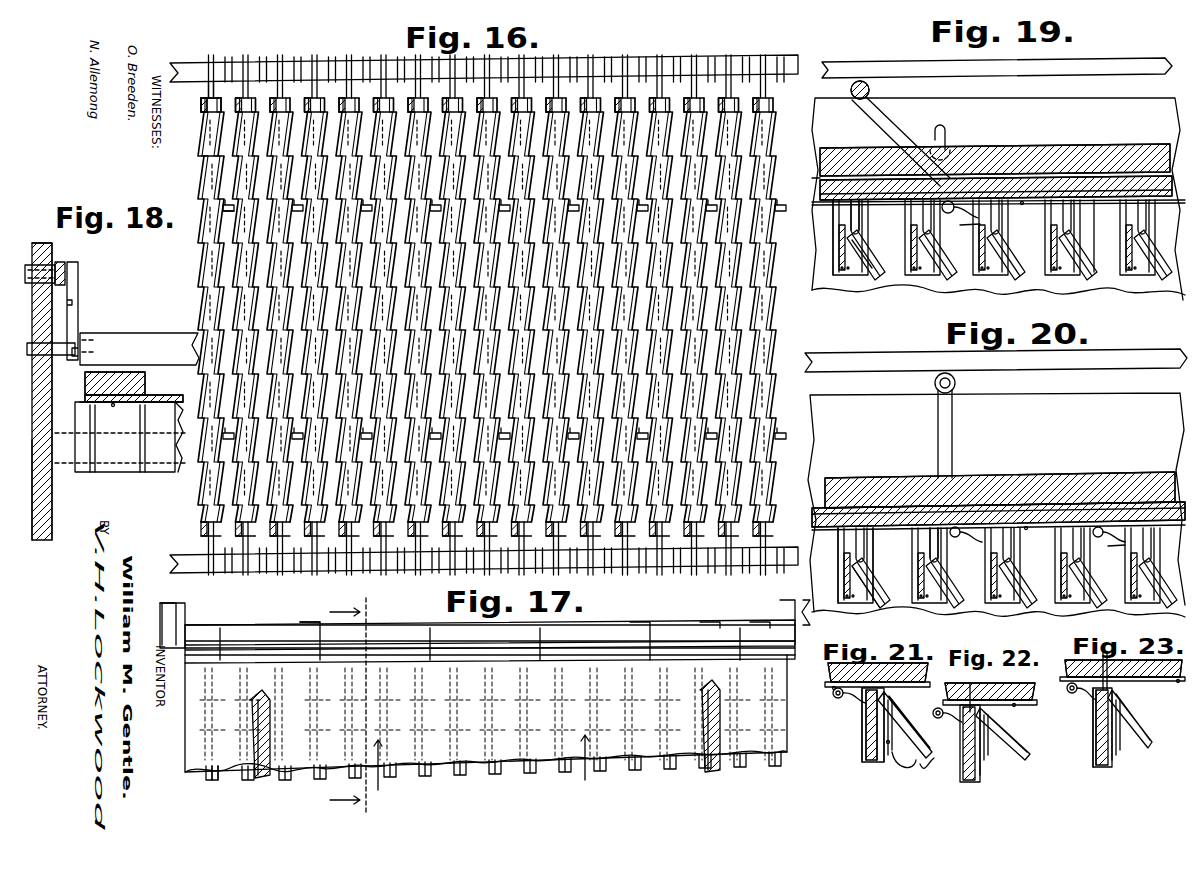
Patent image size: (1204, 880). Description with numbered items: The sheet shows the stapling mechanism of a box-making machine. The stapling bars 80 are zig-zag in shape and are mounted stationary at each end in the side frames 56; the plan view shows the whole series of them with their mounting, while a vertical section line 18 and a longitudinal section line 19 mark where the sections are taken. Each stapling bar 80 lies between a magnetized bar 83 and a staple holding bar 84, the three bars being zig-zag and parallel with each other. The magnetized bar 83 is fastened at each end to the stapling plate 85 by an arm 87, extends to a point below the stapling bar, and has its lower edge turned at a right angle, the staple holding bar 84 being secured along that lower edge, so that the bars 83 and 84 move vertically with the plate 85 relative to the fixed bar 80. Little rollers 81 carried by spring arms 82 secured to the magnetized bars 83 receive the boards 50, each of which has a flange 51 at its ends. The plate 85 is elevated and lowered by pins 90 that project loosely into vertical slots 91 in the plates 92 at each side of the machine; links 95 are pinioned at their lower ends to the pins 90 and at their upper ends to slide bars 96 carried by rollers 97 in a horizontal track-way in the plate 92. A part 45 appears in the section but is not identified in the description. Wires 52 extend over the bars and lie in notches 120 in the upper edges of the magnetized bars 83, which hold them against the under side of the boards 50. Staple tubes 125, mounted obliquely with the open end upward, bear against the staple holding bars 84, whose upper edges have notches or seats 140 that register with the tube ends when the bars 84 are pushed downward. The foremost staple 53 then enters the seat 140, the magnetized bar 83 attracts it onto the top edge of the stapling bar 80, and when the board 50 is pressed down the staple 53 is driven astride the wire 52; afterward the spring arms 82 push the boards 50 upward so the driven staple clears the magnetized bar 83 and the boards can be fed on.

In FIG. 17, the section line 18— 18 is at (352, 703).
In FIG. 17, the section line 19— 19 is at (484, 754).
In FIG. 19, the operating link 45 is at (885, 118).
In FIG. 18, the board 50 is at (162, 395).
In FIG. 19, the board 50 is at (1022, 190).
In FIG. 20, the board 50 is at (1022, 518).
In FIG. 21, the board 50 is at (908, 687).
In FIG. 22, the board 50 is at (1036, 702).
In FIG. 23, the board 50 is at (1156, 682).
In FIG. 18, the flange 51 is at (112, 380).
In FIG. 19, the flange 51 is at (1000, 178).
In FIG. 20, the flange 51 is at (1085, 508).
In FIG. 21, the flange 51 is at (830, 672).
In FIG. 22, the flange 51 is at (970, 683).
In FIG. 23, the flange 51 is at (1064, 668).
In FIG. 18, the wire 52 is at (112, 412).
In FIG. 19, the wire 52 is at (1022, 204).
In FIG. 20, the wire 52 is at (1026, 530).
In FIG. 21, the wire 52 is at (828, 690).
In FIG. 22, the wire 52 is at (1014, 706).
In FIG. 23, the wire 52 is at (1178, 684).
In FIG. 21, the staple 53 is at (910, 784).
In FIG. 22, the staple 53 is at (1016, 740).
In FIG. 23, the staple 53 is at (1140, 752).
In FIG. 16, the side frame 56 is at (302, 582).
In FIG. 17, the side frame 56 is at (485, 618).
In FIG. 18, the side frame 56 is at (34, 480).
In FIG. 19, the side frame 56 is at (998, 285).
In FIG. 20, the side frame 56 is at (998, 612).
In FIG. 16, the stapling bar 80 is at (208, 540).
In FIG. 17, the stapling bar 80 is at (212, 782).
In FIG. 18, the stapling bar 80 is at (68, 460).
In FIG. 19, the stapling bar 80 is at (838, 270).
In FIG. 20, the stapling bar 80 is at (976, 572).
In FIG. 21, the stapling bar 80 is at (866, 740).
In FIG. 22, the stapling bar 80 is at (970, 749).
In FIG. 23, the stapling bar 80 is at (1096, 752).
In FIG. 16, the roller 81 is at (504, 307).
In FIG. 19, the roller 81 is at (948, 212).
In FIG. 20, the roller 81 is at (1098, 538).
In FIG. 21, the roller 81 is at (840, 698).
In FIG. 22, the roller 81 is at (934, 713).
In FIG. 23, the roller 81 is at (1072, 694).
In FIG. 16, the spring arm 82 is at (492, 225).
In FIG. 19, the spring arm 82 is at (966, 230).
In FIG. 20, the spring arm 82 is at (1110, 548).
In FIG. 21, the spring arm 82 is at (850, 706).
In FIG. 22, the spring arm 82 is at (950, 718).
In FIG. 23, the spring arm 82 is at (1086, 702).
In FIG. 16, the magnetized bar 83 is at (770, 140).
In FIG. 17, the magnetized bar 83 is at (210, 776).
In FIG. 18, the magnetized bar 83 is at (158, 472).
In FIG. 19, the magnetized bar 83 is at (840, 252).
In FIG. 20, the magnetized bar 83 is at (972, 590).
In FIG. 21, the magnetized bar 83 is at (863, 750).
In FIG. 23, the magnetized bar 83 is at (1094, 748).
In FIG. 16, the staple holding bar 84 is at (262, 150).
In FIG. 17, the staple holding bar 84 is at (230, 778).
In FIG. 19, the staple holding bar 84 is at (852, 274).
In FIG. 20, the staple holding bar 84 is at (1080, 592).
In FIG. 21, the staple holding bar 84 is at (888, 764).
In FIG. 22, the staple holding bar 84 is at (992, 762).
In FIG. 23, the staple holding bar 84 is at (1124, 765).
In FIG. 17, the stapling plate 85 is at (458, 792).
In FIG. 18, the stapling plate 85 is at (148, 332).
In FIG. 19, the stapling plate 85 is at (1090, 146).
In FIG. 20, the stapling plate 85 is at (880, 478).
In FIG. 16, the arm 87 is at (786, 110).
In FIG. 18, the arm 87 is at (80, 392).
In FIG. 19, the arm 87 is at (820, 200).
In FIG. 17, the pin 90 is at (752, 622).
In FIG. 18, the pin 90 is at (58, 355).
In FIG. 19, the vertical slot 91 is at (942, 140).
In FIG. 17, the plate 92 is at (618, 622).
In FIG. 18, the plate 92 is at (32, 312).
In FIG. 19, the plate 92 is at (1095, 64).
In FIG. 20, the plate 92 is at (1128, 364).
In FIG. 17, the link 95 is at (705, 648).
In FIG. 18, the link 95 is at (78, 318).
In FIG. 20, the link 95 is at (948, 446).
In FIG. 17, the slide bar 96 is at (655, 645).
In FIG. 18, the slide bar 96 is at (62, 262).
In FIG. 19, the slide bar 96 is at (902, 72).
In FIG. 20, the slide bar 96 is at (890, 372).
In FIG. 17, the roller 97 is at (728, 622).
In FIG. 18, the roller 97 is at (32, 262).
In FIG. 16, the notch 120 is at (494, 315).
In FIG. 18, the notch 120 is at (178, 415).
In FIG. 19, the notch 120 is at (804, 171).
In FIG. 19, the staple tube 125 is at (1020, 282).
In FIG. 20, the staple tube 125 is at (1018, 576).
In FIG. 21, the staple tube 125 is at (930, 764).
In FIG. 22, the staple tube 125 is at (1028, 762).
In FIG. 23, the staple tube 125 is at (1140, 732).
In FIG. 16, the notch or seat 140 is at (288, 130).
In FIG. 19, the notch or seat 140 is at (1074, 222).
In FIG. 20, the notch or seat 140 is at (940, 556).